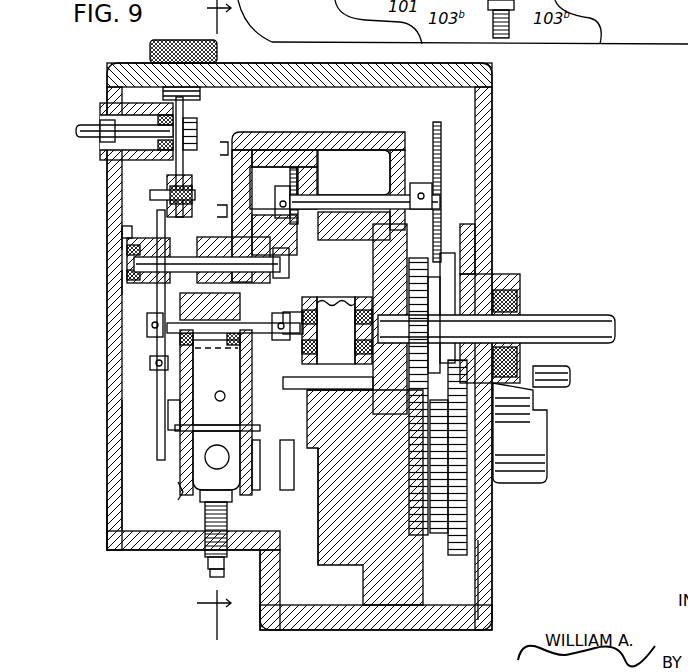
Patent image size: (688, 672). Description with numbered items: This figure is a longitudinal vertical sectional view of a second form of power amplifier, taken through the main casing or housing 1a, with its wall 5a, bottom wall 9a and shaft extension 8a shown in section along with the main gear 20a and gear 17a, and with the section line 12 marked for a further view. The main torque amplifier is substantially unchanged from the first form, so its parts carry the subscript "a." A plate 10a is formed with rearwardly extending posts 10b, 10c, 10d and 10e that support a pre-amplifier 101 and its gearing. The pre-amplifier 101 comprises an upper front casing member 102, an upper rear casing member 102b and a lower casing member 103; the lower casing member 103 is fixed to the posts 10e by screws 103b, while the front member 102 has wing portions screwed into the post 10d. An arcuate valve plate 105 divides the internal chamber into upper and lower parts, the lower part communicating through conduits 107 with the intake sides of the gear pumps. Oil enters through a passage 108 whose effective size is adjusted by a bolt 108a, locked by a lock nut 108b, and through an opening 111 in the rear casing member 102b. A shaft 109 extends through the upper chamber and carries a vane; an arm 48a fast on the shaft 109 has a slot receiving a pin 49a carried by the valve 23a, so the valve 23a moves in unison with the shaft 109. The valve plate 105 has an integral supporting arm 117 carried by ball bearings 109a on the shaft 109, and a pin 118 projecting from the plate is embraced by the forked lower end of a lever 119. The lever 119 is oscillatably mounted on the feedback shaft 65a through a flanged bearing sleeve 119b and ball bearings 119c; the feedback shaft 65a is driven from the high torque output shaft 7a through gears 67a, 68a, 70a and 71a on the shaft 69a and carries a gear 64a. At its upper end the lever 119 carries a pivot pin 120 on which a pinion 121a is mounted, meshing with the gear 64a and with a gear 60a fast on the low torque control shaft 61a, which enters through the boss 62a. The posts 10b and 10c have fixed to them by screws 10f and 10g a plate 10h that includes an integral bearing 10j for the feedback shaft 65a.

The main casing or housing 1a is at (98, 515).
The housing 5a is at (486, 160).
The high torque output shaft 7a is at (617, 318).
The shaft extension 8a is at (572, 370).
The housing bottom wall 9a is at (465, 565).
The plate 10a is at (310, 135).
The post 10b is at (290, 135).
The post 10c is at (268, 197).
The post 10d is at (308, 297).
The post 10e is at (288, 487).
The screw 10f is at (221, 148).
The screw 10g is at (222, 210).
The plate 10h is at (242, 137).
The bearing 10j is at (217, 210).
The section line 12 is at (210, 320).
The gear 17a is at (418, 477).
The gear 20a is at (460, 228).
The valve 23a is at (347, 386).
The arm 48a is at (365, 497).
The pin 49a is at (336, 498).
The gear 60a is at (195, 95).
The low torque control shaft 61a is at (100, 140).
The shaft boss 62a is at (100, 122).
The gear 64a is at (125, 232).
The feedback shaft 65a is at (130, 262).
The gear 67a is at (500, 395).
The gear 68a is at (476, 135).
The shaft 69a is at (365, 205).
The gear 70a is at (300, 182).
The gear 71a is at (318, 245).
The pre-amplifier 101 is at (170, 462).
The upper front casing member 102 is at (250, 410).
The upper rear casing member 102b is at (180, 420).
The lower casing member 103 is at (195, 497).
The screw 103b is at (178, 492).
The arcuate valve plate 105 is at (110, 450).
The conduit 107 is at (262, 470).
The passage 108 is at (217, 491).
The bolt 108a is at (205, 562).
The lock nut 108b is at (241, 570).
The shaft 109 is at (147, 325).
The ball bearings 109a is at (167, 312).
The opening 111 is at (226, 390).
The supporting arm or web 117 is at (240, 358).
The pin 118 is at (150, 364).
The lever 119 is at (122, 418).
The flanged bearing sleeve 119b is at (122, 282).
The ball bearings 119c is at (122, 238).
The pivot pin 120 is at (165, 195).
The pinion 121a is at (180, 178).